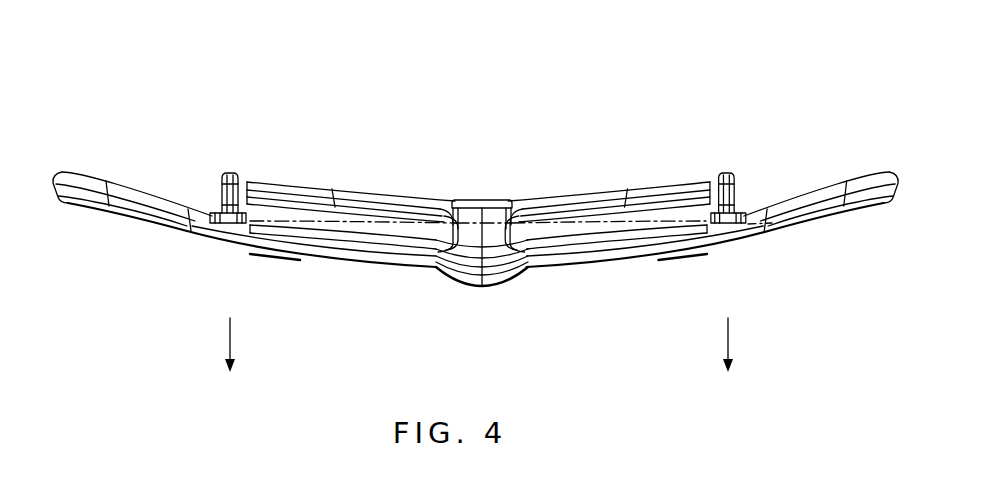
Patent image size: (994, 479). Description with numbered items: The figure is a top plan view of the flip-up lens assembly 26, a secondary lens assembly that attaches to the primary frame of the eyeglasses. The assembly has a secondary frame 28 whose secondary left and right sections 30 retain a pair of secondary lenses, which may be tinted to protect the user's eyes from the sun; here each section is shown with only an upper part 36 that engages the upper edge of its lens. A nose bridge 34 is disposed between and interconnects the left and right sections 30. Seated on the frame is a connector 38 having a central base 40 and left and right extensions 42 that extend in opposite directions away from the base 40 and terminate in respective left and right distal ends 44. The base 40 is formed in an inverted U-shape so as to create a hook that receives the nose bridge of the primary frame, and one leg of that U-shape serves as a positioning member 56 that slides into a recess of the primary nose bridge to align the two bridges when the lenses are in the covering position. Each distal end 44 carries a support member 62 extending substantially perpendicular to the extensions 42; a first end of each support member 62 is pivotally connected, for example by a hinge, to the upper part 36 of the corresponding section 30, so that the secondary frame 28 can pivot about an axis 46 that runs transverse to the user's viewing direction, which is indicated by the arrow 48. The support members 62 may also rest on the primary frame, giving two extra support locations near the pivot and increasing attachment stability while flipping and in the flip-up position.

The flip-up lens assembly 26 is at (548, 102).
The secondary frame 28 is at (871, 180).
The secondary left and right sections 30 is at (83, 170).
The nose bridge 34 is at (491, 290).
The upper part 36 is at (171, 210).
The connector 38 is at (449, 198).
The base 40 is at (470, 233).
The left and right extensions 42 is at (345, 185).
The left and right distal ends 44 is at (237, 174).
The axis 46 is at (605, 232).
The arrow 48 is at (230, 331).
The positioning member 56 is at (487, 198).
The support member 62 is at (218, 181).